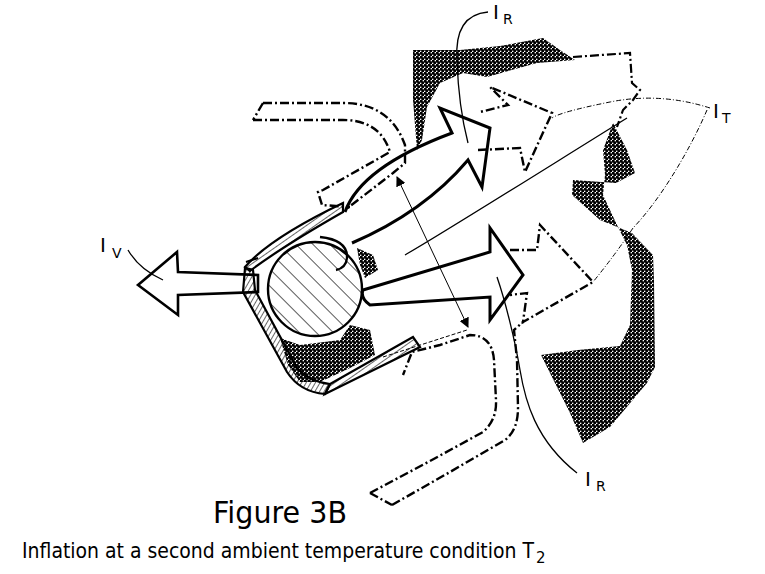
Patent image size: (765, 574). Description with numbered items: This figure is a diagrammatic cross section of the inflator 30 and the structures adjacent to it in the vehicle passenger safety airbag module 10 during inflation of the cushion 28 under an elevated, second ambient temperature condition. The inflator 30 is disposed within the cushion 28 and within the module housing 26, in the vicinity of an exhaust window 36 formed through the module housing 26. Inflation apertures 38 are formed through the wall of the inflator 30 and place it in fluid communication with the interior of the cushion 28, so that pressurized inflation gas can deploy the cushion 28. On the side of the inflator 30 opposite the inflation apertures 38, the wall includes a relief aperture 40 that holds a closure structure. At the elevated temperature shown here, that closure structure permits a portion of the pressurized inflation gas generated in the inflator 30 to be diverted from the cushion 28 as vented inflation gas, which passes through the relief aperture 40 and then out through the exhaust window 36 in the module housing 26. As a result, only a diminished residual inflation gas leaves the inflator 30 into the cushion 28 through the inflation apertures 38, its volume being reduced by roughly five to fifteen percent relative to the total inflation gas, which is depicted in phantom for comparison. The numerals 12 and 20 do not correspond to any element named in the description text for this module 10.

The airbag module 10 is at (352, 64).
The wheel rim (phantom) 12 is at (330, 121).
The tire 20 is at (617, 128).
The module housing 26 is at (295, 398).
The cushion 28 is at (531, 228).
The inflator 30 is at (305, 304).
The exhaust window 36 is at (240, 295).
The inflation apertures 38 is at (317, 227).
The relief aperture 40 is at (253, 253).